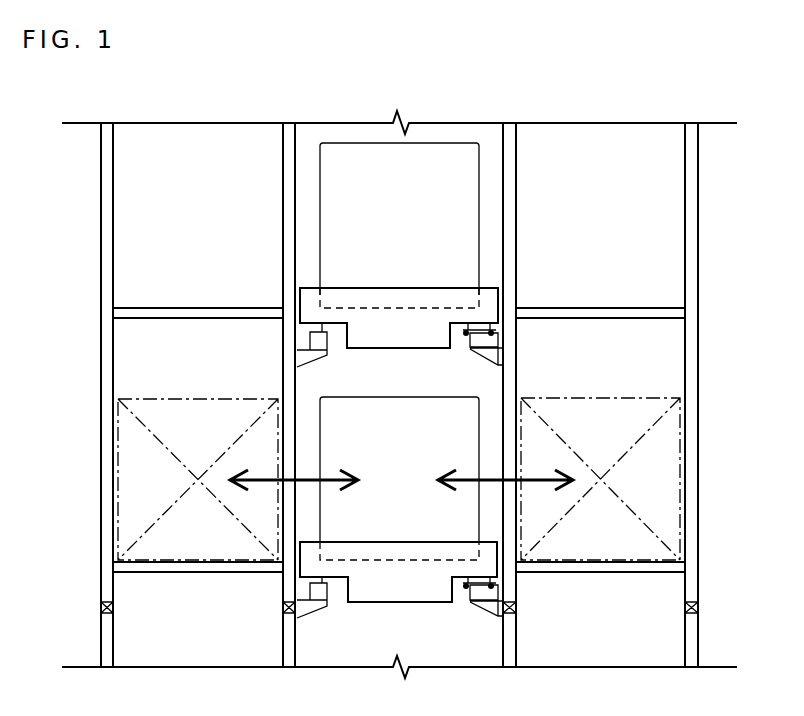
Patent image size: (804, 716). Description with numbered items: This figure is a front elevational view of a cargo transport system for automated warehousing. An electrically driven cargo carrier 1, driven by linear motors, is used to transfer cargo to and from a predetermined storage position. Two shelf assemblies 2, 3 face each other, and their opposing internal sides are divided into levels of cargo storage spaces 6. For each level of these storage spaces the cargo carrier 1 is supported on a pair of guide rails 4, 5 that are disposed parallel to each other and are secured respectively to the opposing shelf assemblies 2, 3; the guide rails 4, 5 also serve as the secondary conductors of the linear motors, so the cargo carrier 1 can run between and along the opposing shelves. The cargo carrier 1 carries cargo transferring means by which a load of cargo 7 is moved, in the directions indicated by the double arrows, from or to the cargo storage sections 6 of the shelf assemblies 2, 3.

The cargo carrier 1 is at (378, 295).
The shelf assembly 2 is at (698, 307).
The shelf assembly 3 is at (102, 333).
The guide rail 4 is at (480, 338).
The guide rail 5 is at (318, 338).
The cargo storage space 6 is at (143, 235).
The cargo 7 is at (463, 183).